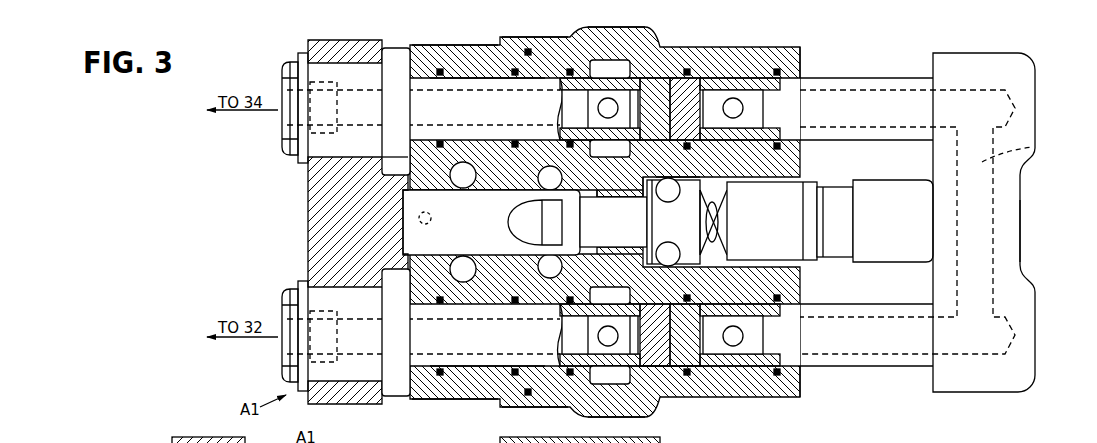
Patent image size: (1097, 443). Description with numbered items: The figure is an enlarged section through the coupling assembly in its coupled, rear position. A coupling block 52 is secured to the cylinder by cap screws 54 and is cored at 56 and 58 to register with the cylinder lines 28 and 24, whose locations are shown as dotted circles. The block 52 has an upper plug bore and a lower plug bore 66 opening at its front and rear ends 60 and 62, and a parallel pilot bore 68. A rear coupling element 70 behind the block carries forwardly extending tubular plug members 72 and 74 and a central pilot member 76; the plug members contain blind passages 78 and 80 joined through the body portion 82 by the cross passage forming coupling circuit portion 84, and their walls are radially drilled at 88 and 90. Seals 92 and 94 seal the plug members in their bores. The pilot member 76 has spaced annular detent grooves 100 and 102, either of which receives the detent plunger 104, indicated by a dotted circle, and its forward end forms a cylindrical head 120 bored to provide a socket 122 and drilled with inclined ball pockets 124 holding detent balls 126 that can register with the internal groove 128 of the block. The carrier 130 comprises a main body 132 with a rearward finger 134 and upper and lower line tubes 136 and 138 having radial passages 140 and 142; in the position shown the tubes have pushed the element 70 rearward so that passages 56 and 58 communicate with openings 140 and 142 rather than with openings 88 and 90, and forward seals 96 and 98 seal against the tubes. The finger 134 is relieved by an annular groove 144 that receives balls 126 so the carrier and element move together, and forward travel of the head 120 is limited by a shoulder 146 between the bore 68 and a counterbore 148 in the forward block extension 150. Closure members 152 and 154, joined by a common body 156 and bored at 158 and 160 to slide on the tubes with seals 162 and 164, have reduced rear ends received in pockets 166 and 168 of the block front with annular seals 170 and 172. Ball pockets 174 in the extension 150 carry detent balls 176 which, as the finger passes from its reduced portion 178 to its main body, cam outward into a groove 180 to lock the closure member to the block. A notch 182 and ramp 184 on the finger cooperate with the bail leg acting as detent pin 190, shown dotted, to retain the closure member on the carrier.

The line 24 is at (637, 314).
The line 28 is at (633, 80).
The coupling block 52 is at (737, 56).
The cap screws 54 is at (640, 30).
The passage 56 is at (590, 63).
The passage 58 is at (625, 293).
The front end 60 is at (500, 41).
The rear end 62 is at (800, 60).
The lower plug bore 66 is at (655, 361).
The pilot bore 68 is at (636, 180).
The rear coupling element 70 is at (1028, 197).
The upper plug member 72 is at (872, 79).
The lower plug member 74 is at (889, 367).
The pilot member 76 is at (871, 184).
The passage 78 is at (758, 93).
The passage 80 is at (760, 318).
The body portion 82 is at (1021, 247).
The coupling circuit portion 84 is at (1034, 148).
The radial passages 88 is at (745, 110).
The radial passages 90 is at (744, 337).
The seal 92 is at (689, 68).
The seal 94 is at (691, 373).
The forward seal 96 is at (556, 171).
The forward seal 98 is at (572, 376).
The front detent groove 100 is at (719, 194).
The rear detent groove 102 is at (850, 215).
The detent plunger 104 is at (722, 212).
The cylindrical head 120 is at (654, 256).
The socket 122 is at (715, 238).
The ball pockets 124 is at (683, 182).
The detent balls 126 is at (663, 196).
The ball-receiving groove 128 is at (562, 268).
The carrier 130 is at (302, 235).
The main body 132 is at (352, 219).
The finger 134 is at (444, 232).
The upper line tube 136 is at (405, 108).
The lower line tube 138 is at (447, 343).
The radial passages 140 is at (597, 92).
The radial passages 142 is at (596, 347).
The annular groove 144 is at (668, 228).
The shoulder 146 is at (491, 281).
The counterbore 148 is at (477, 185).
The forward extension 150 is at (478, 170).
The upper closure member 152 is at (434, 55).
The lower closure member 154 is at (449, 397).
The common body 156 is at (406, 182).
The bore 158 is at (473, 80).
The bore 160 is at (480, 305).
The seal 162 is at (445, 78).
The seal 164 is at (500, 374).
The upper pocket 166 is at (525, 74).
The lower pocket 168 is at (527, 393).
The annular seal 170 is at (523, 55).
The annular seal 172 is at (505, 396).
The ball-receiving pockets 174 is at (458, 255).
The detent balls 176 is at (458, 181).
The reduced cylindrical portion 178 is at (590, 187).
The annular groove 180 is at (453, 282).
The notch 182 is at (560, 221).
The ramp 184 is at (522, 228).
The detent pin 190 is at (419, 220).